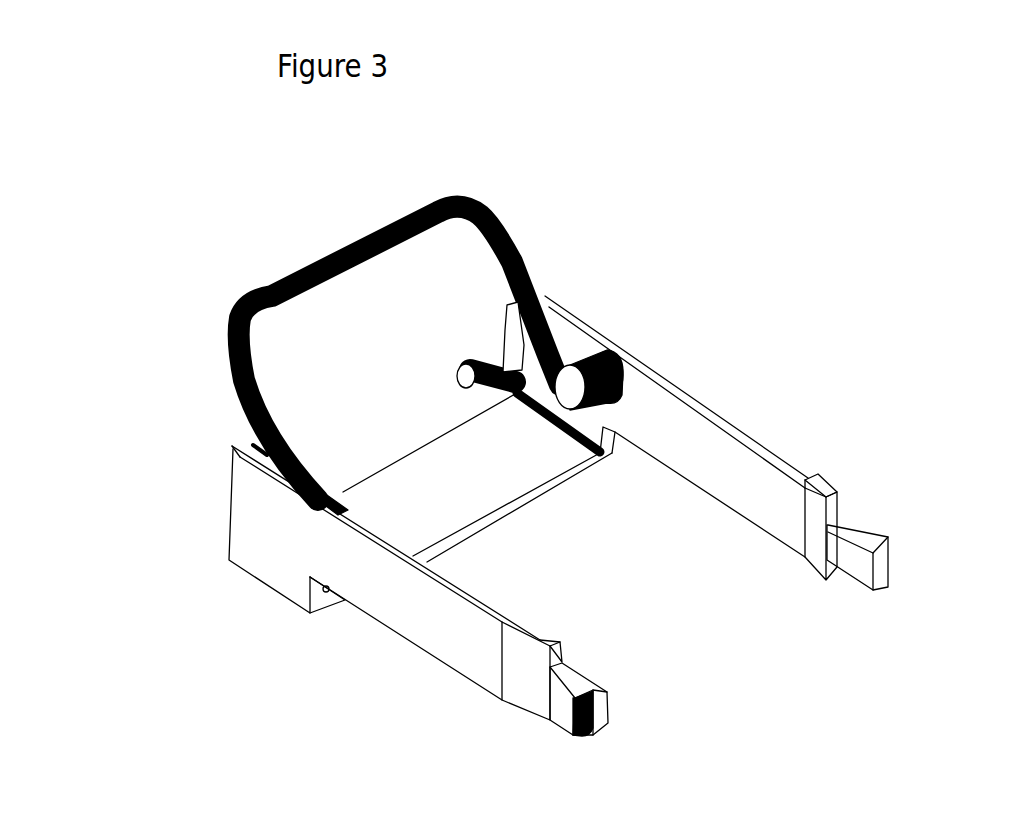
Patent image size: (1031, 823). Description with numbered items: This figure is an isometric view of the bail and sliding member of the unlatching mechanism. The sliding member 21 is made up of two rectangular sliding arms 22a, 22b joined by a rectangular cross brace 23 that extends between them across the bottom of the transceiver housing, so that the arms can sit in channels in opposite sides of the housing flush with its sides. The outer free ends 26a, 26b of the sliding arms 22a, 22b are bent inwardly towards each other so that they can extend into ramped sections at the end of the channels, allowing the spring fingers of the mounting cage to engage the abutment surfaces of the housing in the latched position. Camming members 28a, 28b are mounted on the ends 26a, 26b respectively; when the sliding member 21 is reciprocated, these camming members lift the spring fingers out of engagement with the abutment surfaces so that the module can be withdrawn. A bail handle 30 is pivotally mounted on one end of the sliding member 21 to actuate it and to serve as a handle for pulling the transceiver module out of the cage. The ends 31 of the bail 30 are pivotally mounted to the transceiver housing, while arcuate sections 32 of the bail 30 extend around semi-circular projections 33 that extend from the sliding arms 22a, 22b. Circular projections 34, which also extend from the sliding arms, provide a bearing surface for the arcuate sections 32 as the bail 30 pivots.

The sliding member 21 is at (243, 533).
The sliding arm 22a is at (395, 592).
The sliding arm 22b is at (710, 408).
The cross brace 23 is at (453, 495).
The outer free end 26a is at (528, 687).
The outer free end 26b is at (817, 493).
The camming member 28a is at (593, 707).
The camming member 28b is at (857, 547).
The bail handle 30 is at (348, 248).
The end of the bail 31 is at (453, 360).
The arcuate section 32 is at (517, 395).
The semi-circular projection 33 is at (503, 340).
The circular projection 34 is at (565, 380).